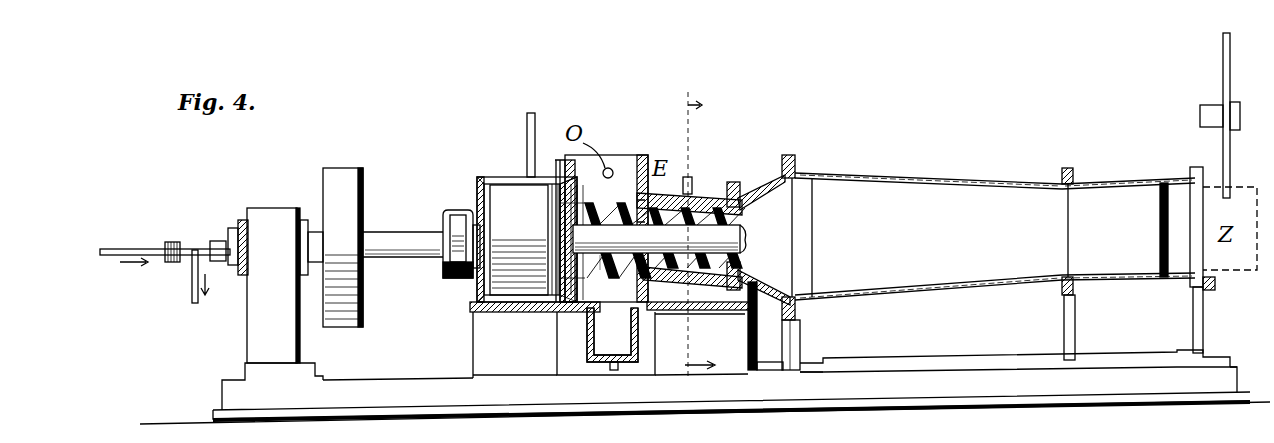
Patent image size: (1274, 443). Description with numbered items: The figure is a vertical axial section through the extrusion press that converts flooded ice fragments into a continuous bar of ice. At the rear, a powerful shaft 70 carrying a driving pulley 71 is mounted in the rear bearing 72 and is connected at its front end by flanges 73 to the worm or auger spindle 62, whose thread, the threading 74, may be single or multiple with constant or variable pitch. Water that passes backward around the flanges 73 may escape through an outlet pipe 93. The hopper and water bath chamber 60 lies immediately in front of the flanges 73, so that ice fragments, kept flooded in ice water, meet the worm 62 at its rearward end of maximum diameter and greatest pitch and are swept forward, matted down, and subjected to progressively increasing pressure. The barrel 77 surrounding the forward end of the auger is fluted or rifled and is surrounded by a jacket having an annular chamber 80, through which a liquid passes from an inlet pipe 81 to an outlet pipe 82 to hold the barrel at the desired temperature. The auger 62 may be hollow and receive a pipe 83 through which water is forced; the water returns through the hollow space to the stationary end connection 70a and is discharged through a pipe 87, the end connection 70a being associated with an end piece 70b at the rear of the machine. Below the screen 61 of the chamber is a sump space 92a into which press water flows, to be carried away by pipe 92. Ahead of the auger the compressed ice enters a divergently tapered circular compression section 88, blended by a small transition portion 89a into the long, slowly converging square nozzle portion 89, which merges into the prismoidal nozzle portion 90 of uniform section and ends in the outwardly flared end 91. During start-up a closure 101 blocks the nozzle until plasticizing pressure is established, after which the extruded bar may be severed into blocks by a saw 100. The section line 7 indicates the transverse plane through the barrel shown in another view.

The section line 7- 7 is at (697, 238).
The hopper and water bath chamber 60 is at (626, 160).
The screen 61 is at (612, 339).
The worm or auger spindle 62 is at (604, 275).
The shaft 70 is at (383, 241).
The stationary end connection 70a is at (240, 236).
The shaft collar 70b is at (460, 210).
The driving pulley 71 is at (352, 181).
The rear bearing 72 is at (268, 218).
The flanges 73 is at (556, 218).
The threading of the auger 74 is at (637, 211).
The barrel 77 is at (735, 262).
The annular chamber 80 is at (705, 195).
The inlet pipe 81 is at (683, 312).
The outlet pipe 82 is at (691, 178).
The pipe 83 is at (118, 249).
The pipe 87 is at (192, 288).
The reversely tapered section 88 is at (766, 175).
The convergently-tapered nozzle portion 89 is at (906, 162).
The transition portion 89a is at (797, 222).
The prismoidal nozzle portion 90 is at (1112, 182).
The outwardly flared end 91 is at (1190, 180).
The pipe 92 is at (705, 417).
The space 92a is at (600, 343).
The outlet pipe 93 is at (527, 131).
The saw 100 is at (1207, 108).
The closure 101 is at (1240, 298).